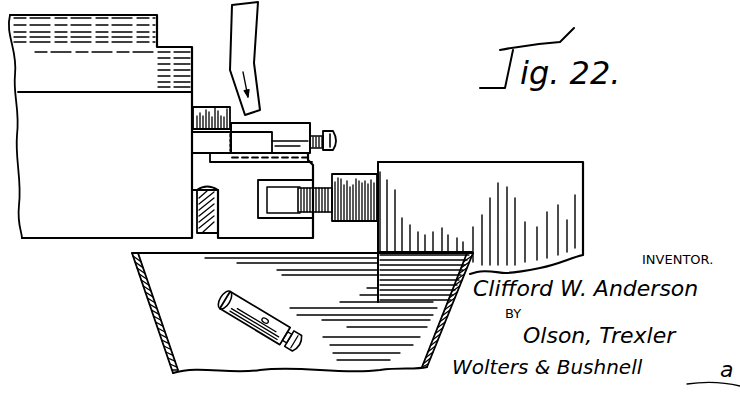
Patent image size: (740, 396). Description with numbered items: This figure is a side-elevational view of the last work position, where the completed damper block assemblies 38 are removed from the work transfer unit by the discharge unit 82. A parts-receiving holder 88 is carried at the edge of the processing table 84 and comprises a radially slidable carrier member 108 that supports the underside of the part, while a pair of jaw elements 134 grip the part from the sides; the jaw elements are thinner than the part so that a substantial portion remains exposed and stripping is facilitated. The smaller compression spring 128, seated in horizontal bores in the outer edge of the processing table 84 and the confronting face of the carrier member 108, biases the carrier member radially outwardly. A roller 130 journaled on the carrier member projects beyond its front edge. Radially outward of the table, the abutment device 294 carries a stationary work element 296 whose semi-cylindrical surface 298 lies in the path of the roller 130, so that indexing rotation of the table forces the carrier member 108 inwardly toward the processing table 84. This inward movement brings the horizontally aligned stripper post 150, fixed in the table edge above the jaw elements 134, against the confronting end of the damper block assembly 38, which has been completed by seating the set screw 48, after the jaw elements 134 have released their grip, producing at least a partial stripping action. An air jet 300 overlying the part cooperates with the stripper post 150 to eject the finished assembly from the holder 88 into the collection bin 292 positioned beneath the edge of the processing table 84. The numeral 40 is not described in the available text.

The reel assembly 40 is at (476, 5).
The processing table 84 is at (84, 84).
The stripper post 150 is at (207, 106).
The jaw elements 134 is at (203, 140).
The air jet 300 is at (232, 32).
The parts-receiving holder 88 is at (276, 101).
The carrier member 108 is at (272, 240).
The damper block body assembly 38 is at (300, 119).
The set screw 48 is at (316, 128).
The discharge unit 82 is at (399, 99).
The roller 130 is at (313, 186).
The stationary work element 296 is at (362, 172).
The abutment device 294 is at (564, 161).
The semi-cylindrical surface 298 is at (370, 197).
The compression spring 128 is at (197, 238).
The collection bin 292 is at (150, 315).